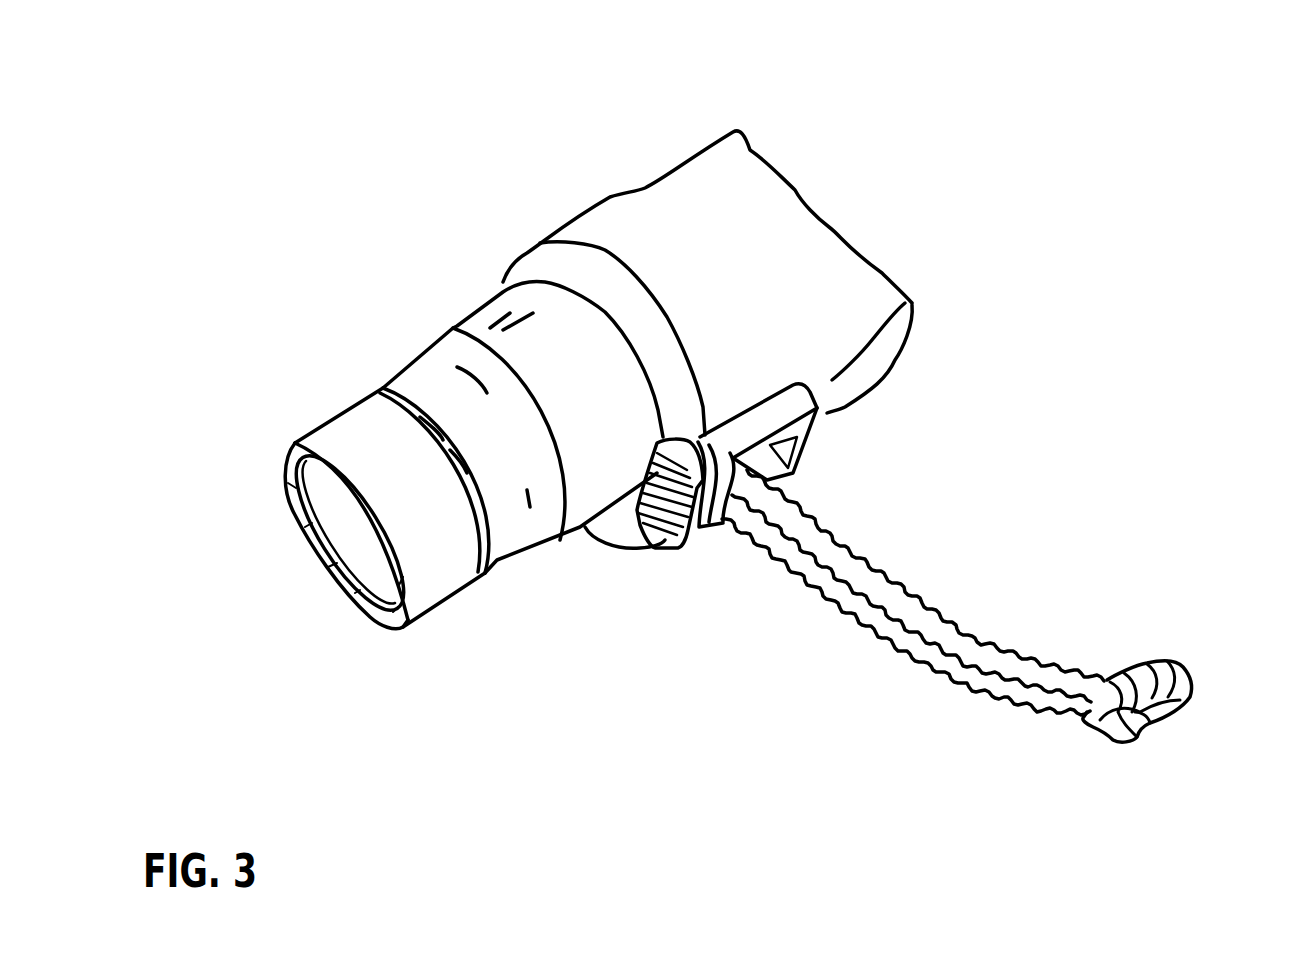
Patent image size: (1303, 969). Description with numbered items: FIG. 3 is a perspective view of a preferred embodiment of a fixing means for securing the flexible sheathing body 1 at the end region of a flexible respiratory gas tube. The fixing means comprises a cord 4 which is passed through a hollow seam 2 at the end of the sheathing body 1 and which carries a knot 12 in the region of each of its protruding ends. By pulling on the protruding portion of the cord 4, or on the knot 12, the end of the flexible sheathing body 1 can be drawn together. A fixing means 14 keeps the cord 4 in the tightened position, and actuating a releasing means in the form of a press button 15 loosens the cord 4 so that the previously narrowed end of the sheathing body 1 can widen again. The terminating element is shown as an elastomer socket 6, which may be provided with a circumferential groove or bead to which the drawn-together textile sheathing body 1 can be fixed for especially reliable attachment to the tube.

The flexible sheathing body 1 is at (693, 192).
The hollow seam 2 is at (545, 258).
The elastomer socket 6 is at (348, 440).
The fixing means 14 is at (745, 435).
The press button 15 is at (653, 530).
The cord 4 is at (853, 578).
The knot 12 is at (1187, 677).